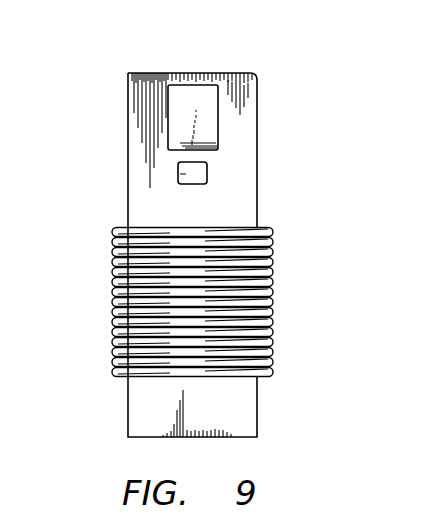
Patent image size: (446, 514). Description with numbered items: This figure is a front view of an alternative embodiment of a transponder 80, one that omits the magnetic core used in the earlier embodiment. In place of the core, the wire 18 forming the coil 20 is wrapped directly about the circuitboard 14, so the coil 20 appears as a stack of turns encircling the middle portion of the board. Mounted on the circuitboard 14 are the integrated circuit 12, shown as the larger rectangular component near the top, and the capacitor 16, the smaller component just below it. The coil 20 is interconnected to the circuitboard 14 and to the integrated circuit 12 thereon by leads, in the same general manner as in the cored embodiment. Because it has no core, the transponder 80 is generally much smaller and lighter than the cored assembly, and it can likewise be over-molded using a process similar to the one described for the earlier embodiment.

The circuitboard 14 is at (205, 72).
The integrated circuit 12 is at (218, 122).
The capacitor 16 is at (207, 173).
The coil 20 is at (276, 281).
The wire 18 is at (275, 339).
The transponder 80 is at (101, 143).